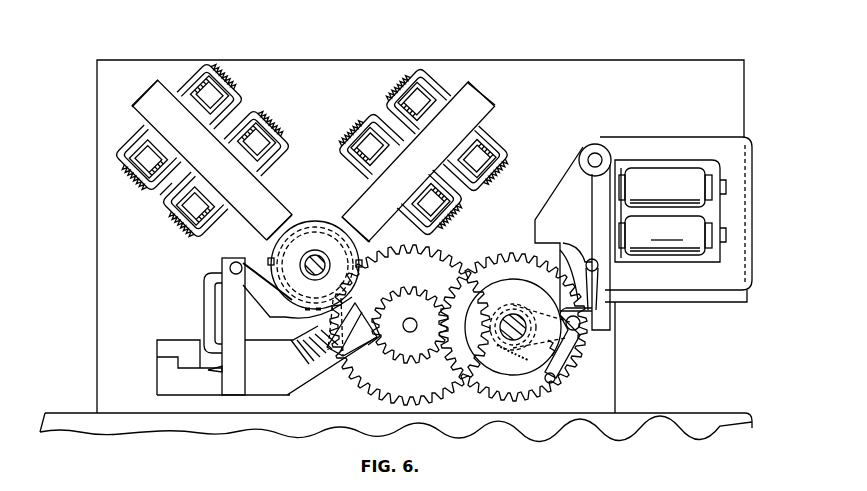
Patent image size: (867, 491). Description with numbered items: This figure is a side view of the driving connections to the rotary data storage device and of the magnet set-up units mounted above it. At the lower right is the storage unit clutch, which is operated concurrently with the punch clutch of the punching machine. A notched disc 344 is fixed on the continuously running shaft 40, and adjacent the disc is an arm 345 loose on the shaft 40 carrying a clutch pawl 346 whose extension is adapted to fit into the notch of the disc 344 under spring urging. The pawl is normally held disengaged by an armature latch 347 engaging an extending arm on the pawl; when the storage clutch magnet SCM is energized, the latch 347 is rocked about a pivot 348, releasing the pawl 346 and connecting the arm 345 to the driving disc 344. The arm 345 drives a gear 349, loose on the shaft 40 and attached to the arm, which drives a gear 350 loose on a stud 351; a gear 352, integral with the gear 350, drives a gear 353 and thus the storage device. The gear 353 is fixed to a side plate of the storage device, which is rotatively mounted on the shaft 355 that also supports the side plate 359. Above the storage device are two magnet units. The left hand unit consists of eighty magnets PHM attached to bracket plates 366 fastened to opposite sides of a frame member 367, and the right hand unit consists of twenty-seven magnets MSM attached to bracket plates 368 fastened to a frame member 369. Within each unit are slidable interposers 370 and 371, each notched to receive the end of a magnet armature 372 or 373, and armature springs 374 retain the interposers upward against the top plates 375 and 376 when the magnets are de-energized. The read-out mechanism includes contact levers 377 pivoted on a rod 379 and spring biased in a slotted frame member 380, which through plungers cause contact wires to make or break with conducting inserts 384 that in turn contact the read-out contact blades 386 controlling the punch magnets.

The continuously running shaft 40 is at (508, 318).
The notched disc 344 is at (511, 370).
The arm 345 is at (564, 252).
The clutch pawl 346 is at (560, 380).
The armature latch 347 is at (605, 278).
The pivot 348 is at (593, 153).
The gear 349 is at (505, 396).
The gear 350 is at (390, 348).
The stud 351 is at (411, 318).
The gear 352 is at (372, 394).
The gear 353 is at (330, 224).
The shaft 355 is at (325, 265).
The side plate 359 is at (285, 308).
The bracket plates 366 is at (200, 233).
The frame member 367 is at (136, 110).
The bracket plates 368 is at (395, 90).
The frame member 369 is at (497, 111).
The interposers 370 is at (288, 222).
The interposers 371 is at (368, 244).
The magnet armature 372 is at (162, 198).
The magnet armature 373 is at (396, 127).
The armature springs 374 is at (120, 180).
The top plate 375 is at (150, 90).
The top plate 376 is at (493, 95).
The contact levers 377 is at (205, 278).
The rod 379 is at (236, 262).
The slotted frame member 380 is at (375, 337).
The conducting inserts 384 is at (228, 374).
The read-out contact blades 386 is at (214, 370).
The pierced hole magnets PHM is at (250, 127).
The mark sensing magnets MSM is at (480, 175).
The storage clutch magnet SCM is at (670, 211).